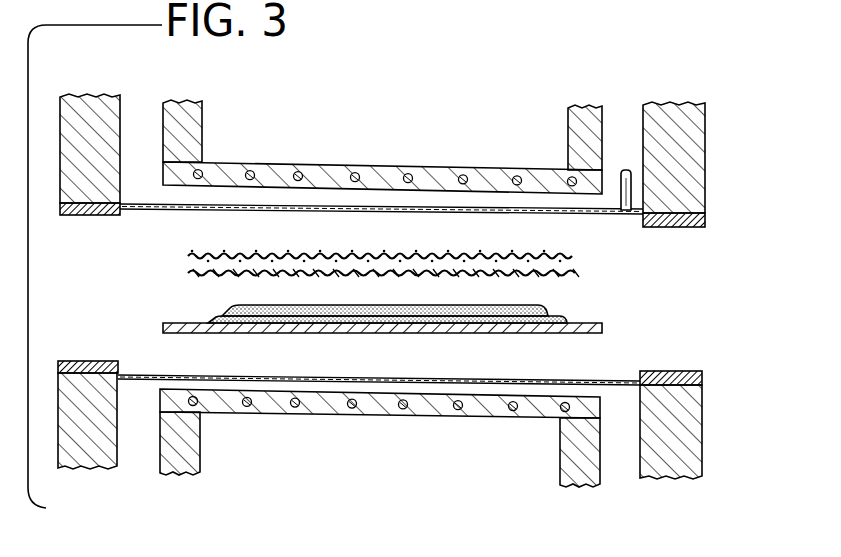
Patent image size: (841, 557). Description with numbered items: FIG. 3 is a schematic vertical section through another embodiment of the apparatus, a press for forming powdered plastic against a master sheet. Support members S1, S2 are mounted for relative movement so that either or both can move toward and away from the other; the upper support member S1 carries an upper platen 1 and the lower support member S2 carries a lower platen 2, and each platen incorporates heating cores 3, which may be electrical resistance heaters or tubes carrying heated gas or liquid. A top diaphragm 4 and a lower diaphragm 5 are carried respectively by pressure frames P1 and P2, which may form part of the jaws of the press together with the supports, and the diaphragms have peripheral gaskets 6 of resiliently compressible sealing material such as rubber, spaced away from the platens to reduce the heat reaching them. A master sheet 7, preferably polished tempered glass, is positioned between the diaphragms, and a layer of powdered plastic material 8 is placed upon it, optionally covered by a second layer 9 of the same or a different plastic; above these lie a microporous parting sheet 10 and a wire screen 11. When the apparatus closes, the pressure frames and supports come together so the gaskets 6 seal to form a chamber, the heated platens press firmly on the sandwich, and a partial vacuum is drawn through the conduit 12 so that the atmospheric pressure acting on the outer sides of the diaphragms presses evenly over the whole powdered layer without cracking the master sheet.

The upper platen 1 is at (390, 166).
The lower platen 2 is at (383, 409).
The heating cores 3 is at (295, 168).
The top diaphragm 4 is at (359, 214).
The lower diaphragm 5 is at (352, 376).
The peripheral gaskets 6 is at (88, 217).
The master sheet 7 is at (447, 333).
The layer of powdered plastic material 8 is at (560, 324).
The second layer 9 is at (445, 306).
The microporous parting sheet 10 is at (580, 276).
The wire screen 11 is at (498, 258).
The conduit 12 is at (620, 173).
The pressure frame P1 is at (97, 107).
The pressure frame P2 is at (96, 454).
The support member S1 is at (195, 131).
The support member S2 is at (194, 454).